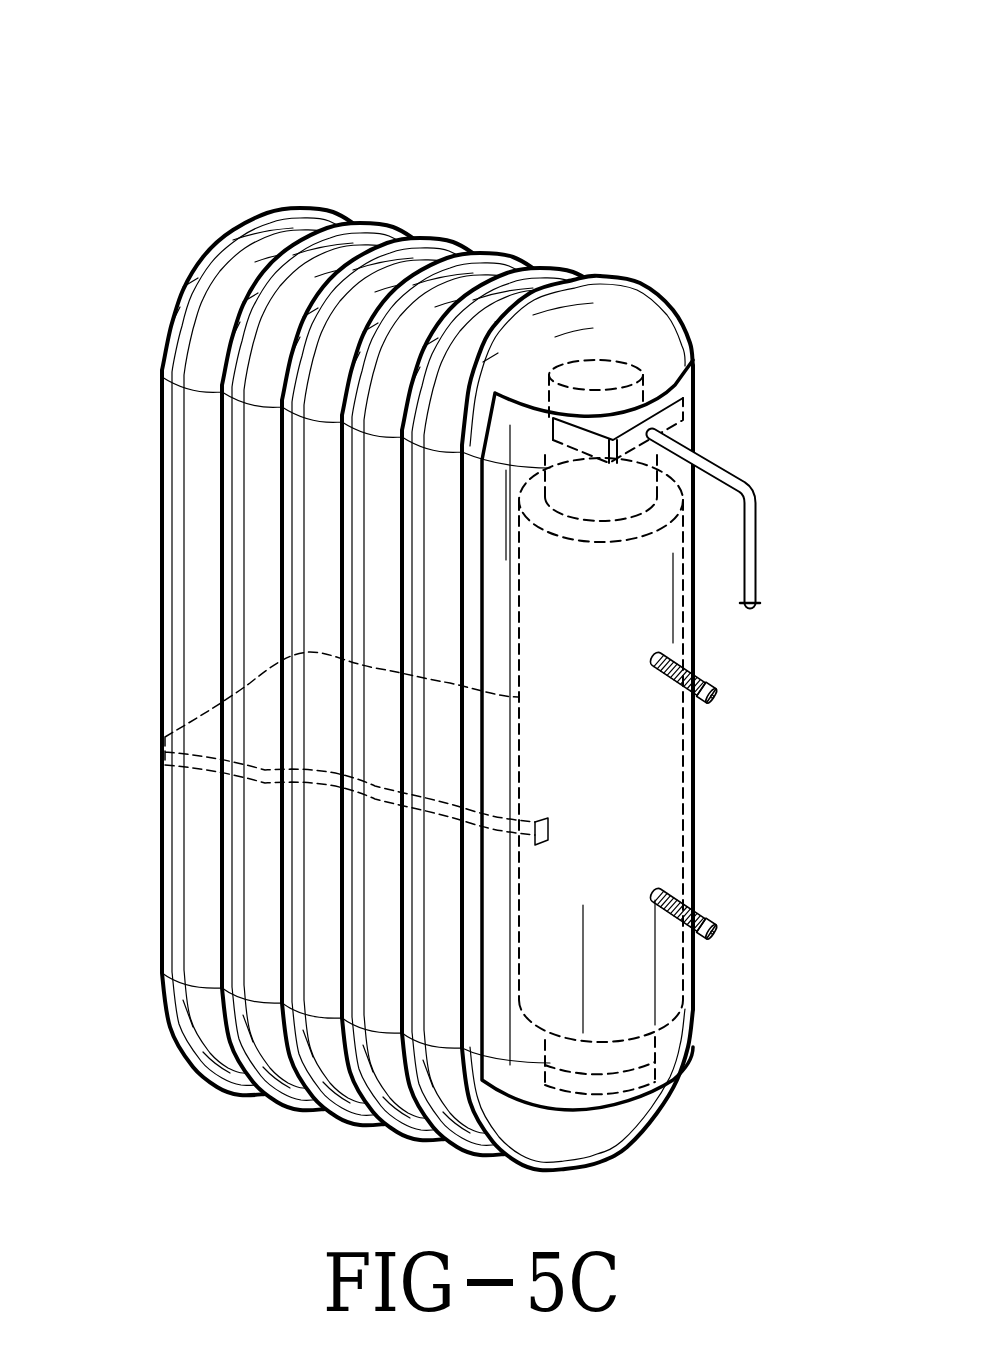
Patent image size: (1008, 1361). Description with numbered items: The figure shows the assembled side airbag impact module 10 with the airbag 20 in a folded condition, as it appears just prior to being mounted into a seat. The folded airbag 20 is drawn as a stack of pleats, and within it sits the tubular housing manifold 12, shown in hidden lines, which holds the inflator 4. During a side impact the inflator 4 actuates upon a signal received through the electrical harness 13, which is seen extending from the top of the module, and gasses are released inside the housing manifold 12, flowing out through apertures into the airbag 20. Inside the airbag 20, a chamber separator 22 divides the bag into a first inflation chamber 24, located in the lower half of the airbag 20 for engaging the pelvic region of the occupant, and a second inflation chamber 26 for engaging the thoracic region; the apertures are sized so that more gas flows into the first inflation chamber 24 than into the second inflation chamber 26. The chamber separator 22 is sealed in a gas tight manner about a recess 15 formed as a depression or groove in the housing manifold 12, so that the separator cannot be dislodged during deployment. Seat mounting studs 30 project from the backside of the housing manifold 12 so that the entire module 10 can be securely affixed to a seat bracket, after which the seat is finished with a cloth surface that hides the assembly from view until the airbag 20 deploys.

The airbag 20 is at (372, 585).
The side airbag impact module 10 is at (456, 230).
The inflator 4 is at (617, 393).
The electrical harness 13 is at (745, 548).
The seat mounting studs 30 is at (705, 690).
The recess 15 is at (538, 810).
The housing manifold 12 is at (630, 1045).
The chamber separator 22 is at (255, 685).
The first inflation chamber 24 is at (226, 651).
The second inflation chamber 26 is at (215, 540).